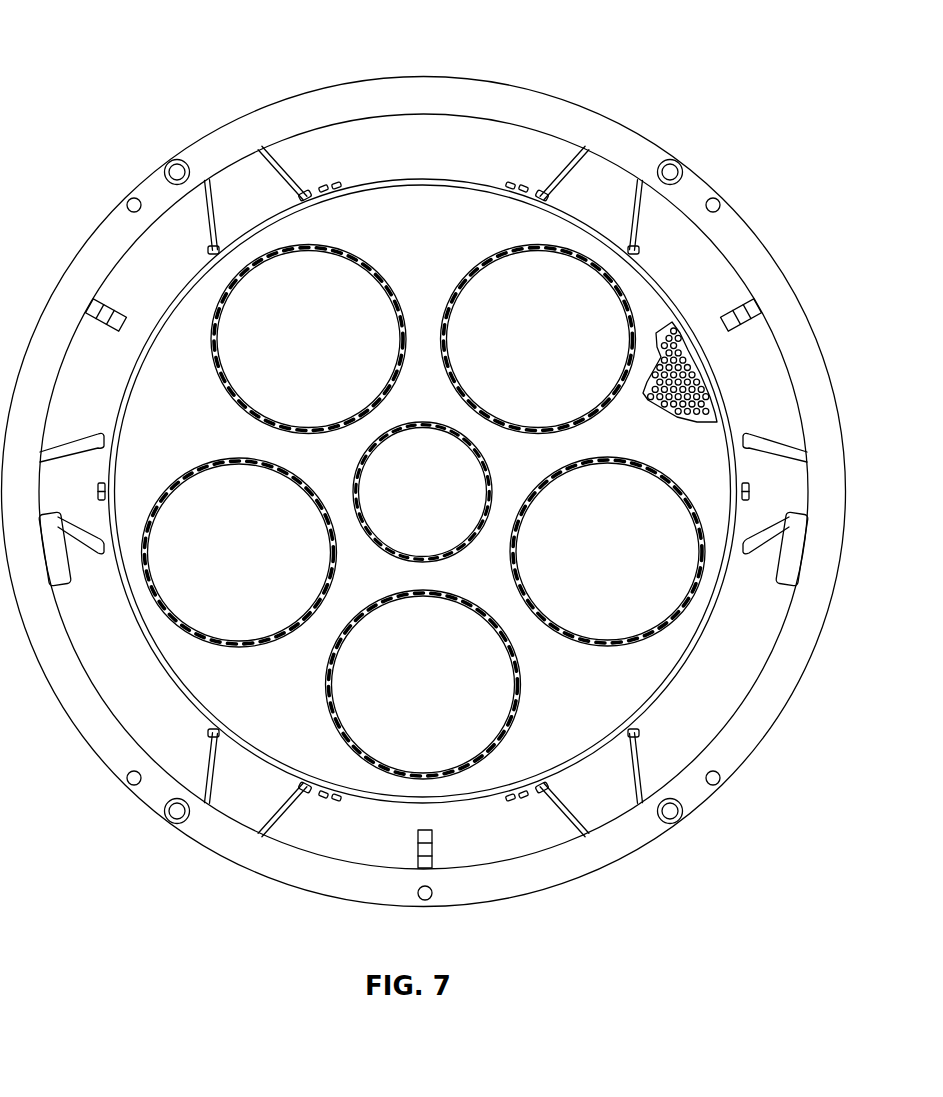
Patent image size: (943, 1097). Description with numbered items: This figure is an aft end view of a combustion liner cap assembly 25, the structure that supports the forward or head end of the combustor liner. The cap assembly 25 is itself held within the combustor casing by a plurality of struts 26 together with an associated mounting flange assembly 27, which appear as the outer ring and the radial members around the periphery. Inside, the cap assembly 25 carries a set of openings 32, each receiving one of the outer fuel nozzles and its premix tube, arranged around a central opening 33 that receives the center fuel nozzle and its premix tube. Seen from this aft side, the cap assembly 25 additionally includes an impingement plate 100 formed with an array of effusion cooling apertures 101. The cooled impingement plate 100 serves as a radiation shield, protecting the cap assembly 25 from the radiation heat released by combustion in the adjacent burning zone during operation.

The combustion liner cap assembly 25 is at (120, 55).
The strut 26 is at (631, 235).
The mounting flange assembly 27 is at (627, 142).
The opening 32 is at (500, 262).
The opening 33 is at (473, 475).
The impingement plate 100 is at (640, 298).
The effusion cooling aperture 101 is at (706, 362).